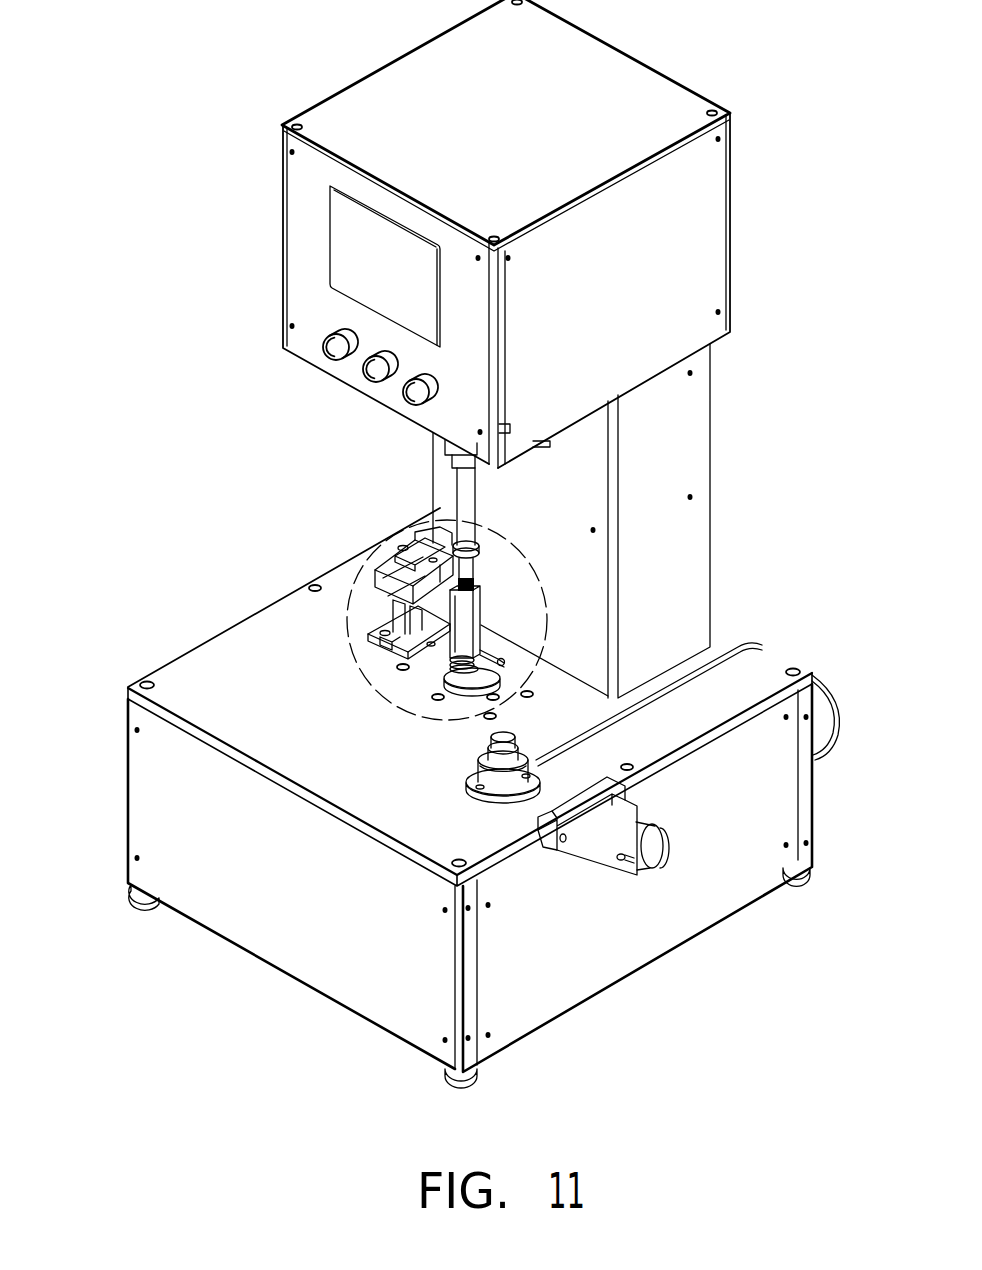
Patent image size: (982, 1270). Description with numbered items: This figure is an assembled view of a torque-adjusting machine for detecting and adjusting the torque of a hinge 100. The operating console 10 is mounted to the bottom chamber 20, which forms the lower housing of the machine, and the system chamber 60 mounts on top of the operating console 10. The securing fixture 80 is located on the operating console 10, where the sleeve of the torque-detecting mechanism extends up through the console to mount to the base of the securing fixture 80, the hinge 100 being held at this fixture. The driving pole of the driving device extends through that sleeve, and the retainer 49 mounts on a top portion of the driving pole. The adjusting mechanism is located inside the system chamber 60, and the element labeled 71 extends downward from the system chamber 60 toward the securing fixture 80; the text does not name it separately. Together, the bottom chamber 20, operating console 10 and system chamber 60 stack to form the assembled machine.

The operating console 10 is at (263, 733).
The bottom chamber 20 is at (595, 940).
The retainer 49 is at (460, 630).
The system chamber 60 is at (672, 240).
The driving rod 71 is at (467, 488).
The securing fixture 80 is at (374, 568).
The hinge 100 is at (448, 672).